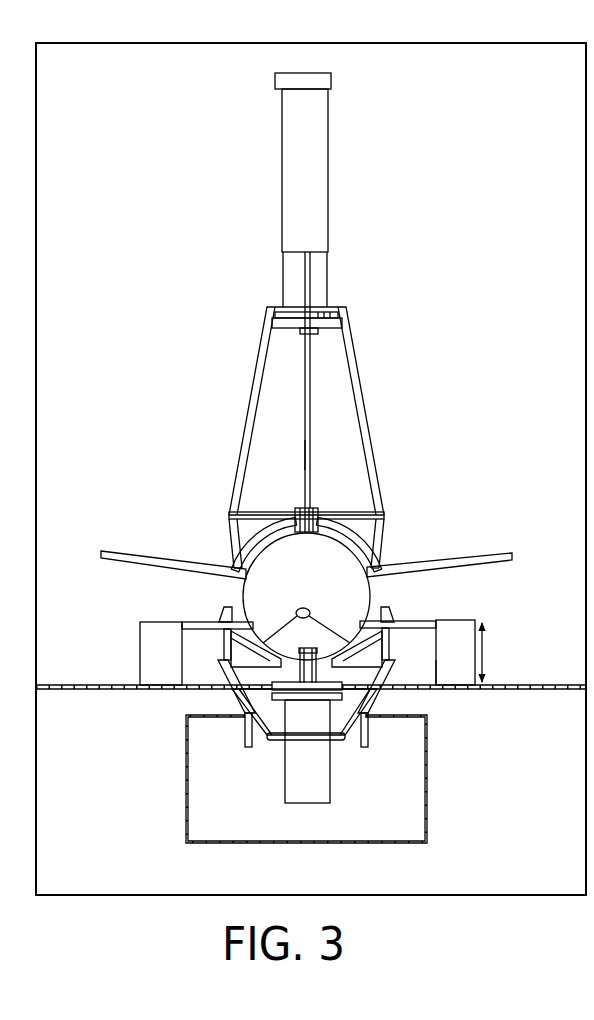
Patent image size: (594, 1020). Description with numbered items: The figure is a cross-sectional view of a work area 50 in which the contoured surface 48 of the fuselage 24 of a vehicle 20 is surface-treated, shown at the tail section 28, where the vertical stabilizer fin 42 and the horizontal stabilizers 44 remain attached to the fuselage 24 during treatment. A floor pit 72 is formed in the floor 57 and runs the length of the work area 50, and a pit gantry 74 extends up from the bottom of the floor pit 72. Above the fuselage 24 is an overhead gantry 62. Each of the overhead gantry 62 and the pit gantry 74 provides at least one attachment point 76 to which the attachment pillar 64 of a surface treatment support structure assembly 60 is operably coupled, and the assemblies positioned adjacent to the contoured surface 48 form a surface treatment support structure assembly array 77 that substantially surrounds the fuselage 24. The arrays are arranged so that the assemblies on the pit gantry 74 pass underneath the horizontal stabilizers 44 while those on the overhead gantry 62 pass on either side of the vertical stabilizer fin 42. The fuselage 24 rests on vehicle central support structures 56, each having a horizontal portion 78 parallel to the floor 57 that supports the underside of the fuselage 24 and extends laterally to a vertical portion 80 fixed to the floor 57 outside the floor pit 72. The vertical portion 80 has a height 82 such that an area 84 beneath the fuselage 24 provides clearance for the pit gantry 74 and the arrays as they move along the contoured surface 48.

The vehicle 20 is at (177, 430).
The fuselage 24 is at (352, 592).
The tail section 28 is at (297, 448).
The vertical stabilizer fin 42 is at (309, 456).
The horizontal stabilizers 44 is at (448, 556).
The contoured surface 48 is at (241, 592).
The work area 50 is at (163, 220).
The vehicle central support structures 56 is at (150, 678).
The floor 57 is at (515, 683).
The surface treatment support structure assembly 60 is at (212, 545).
The overhead gantry 62 is at (320, 243).
The attachment pillar 64 is at (372, 470).
The floor pit 72 is at (413, 823).
The pit gantry 74 is at (300, 786).
The attachment point 76 is at (276, 322).
The surface treatment support structure assembly array 77 is at (391, 528).
The horizontal portion 78 is at (165, 620).
The vertical portion 80 is at (150, 643).
The height 82 is at (486, 650).
The area 84 is at (425, 668).